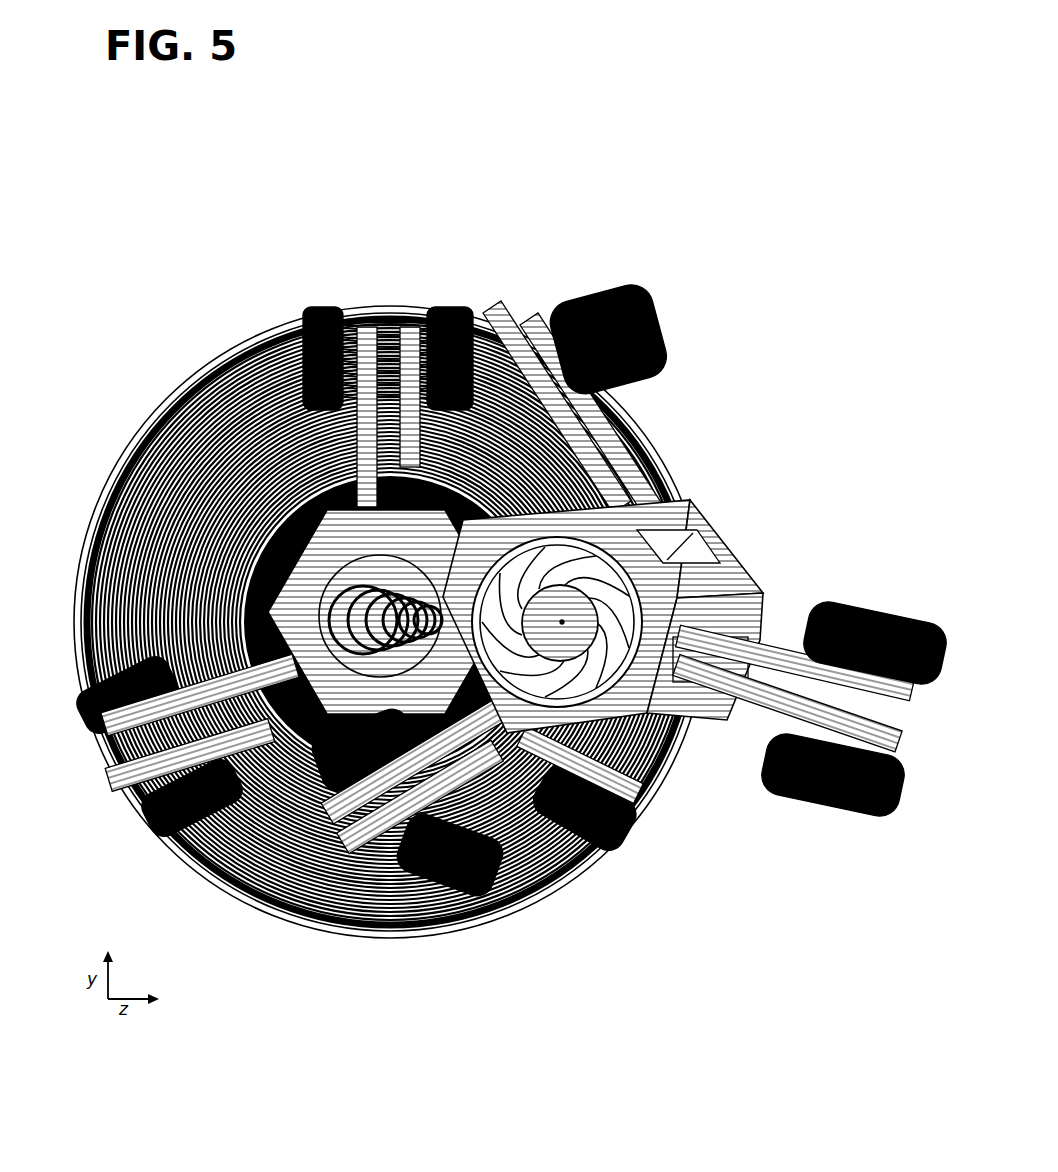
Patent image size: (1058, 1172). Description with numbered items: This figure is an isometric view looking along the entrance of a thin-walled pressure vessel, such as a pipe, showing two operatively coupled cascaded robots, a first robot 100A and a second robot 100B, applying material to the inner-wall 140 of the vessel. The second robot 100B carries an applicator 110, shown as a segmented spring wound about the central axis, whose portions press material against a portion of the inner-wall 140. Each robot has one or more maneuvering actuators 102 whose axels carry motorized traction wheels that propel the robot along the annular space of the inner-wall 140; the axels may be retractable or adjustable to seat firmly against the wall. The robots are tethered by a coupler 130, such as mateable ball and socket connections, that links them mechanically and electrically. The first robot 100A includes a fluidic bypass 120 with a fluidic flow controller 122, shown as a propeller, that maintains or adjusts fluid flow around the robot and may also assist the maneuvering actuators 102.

The applicator 110 is at (163, 423).
The inner-wall 140 is at (135, 467).
The second robot 100B is at (118, 493).
The coupler 130 is at (383, 633).
The first robot 100A is at (718, 527).
The fluidic bypass 120 is at (700, 553).
The fluidic flow controller 122 is at (562, 622).
The maneuvering actuator 102 is at (870, 825).